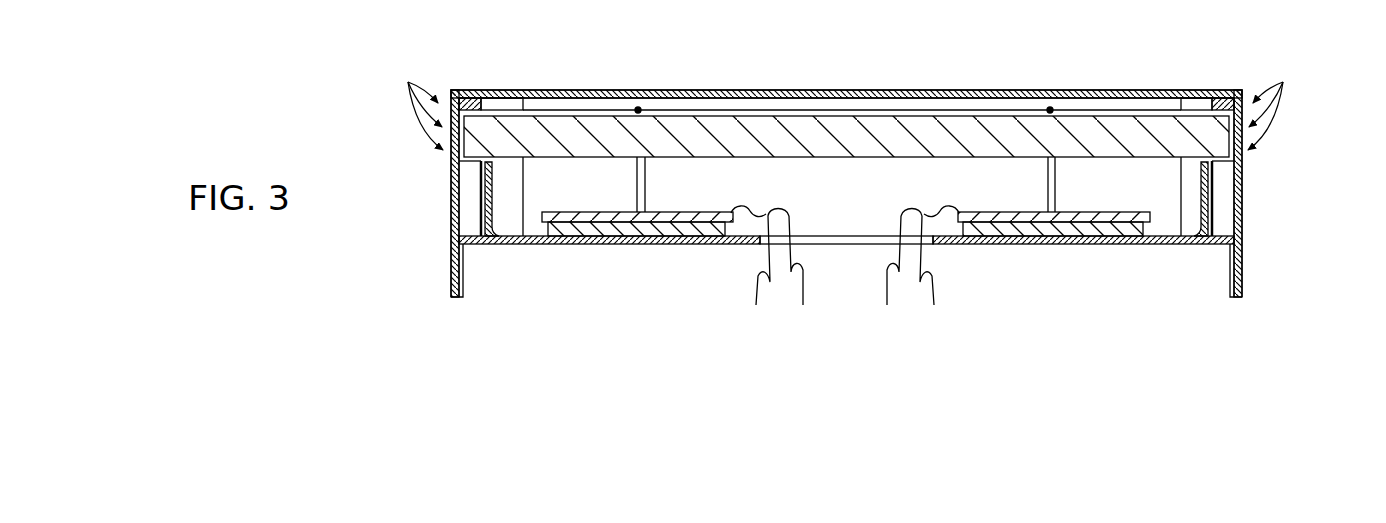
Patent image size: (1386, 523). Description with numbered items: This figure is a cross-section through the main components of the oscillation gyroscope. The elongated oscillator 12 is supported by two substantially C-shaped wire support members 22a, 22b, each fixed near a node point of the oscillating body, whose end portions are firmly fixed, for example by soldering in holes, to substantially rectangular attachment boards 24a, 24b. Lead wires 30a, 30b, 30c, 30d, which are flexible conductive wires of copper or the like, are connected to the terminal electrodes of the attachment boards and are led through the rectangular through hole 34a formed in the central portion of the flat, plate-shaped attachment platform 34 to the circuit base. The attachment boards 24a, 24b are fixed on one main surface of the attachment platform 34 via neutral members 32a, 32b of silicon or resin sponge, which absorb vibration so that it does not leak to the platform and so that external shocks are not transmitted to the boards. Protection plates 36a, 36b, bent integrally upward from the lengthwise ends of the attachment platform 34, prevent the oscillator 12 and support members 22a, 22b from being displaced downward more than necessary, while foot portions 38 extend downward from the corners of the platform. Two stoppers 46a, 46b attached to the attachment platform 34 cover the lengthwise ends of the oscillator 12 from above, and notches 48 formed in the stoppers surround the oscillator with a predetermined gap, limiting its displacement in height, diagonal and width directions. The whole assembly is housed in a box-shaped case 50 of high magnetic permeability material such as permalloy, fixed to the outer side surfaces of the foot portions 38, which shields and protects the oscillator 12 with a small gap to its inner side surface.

The oscillator 12 is at (802, 116).
The support member 22a is at (638, 108).
The support member 22b is at (1050, 108).
The attachment board 24a is at (665, 218).
The attachment board 24b is at (1060, 218).
The lead wire 30a is at (806, 272).
The lead wire 30b is at (768, 275).
The lead wire 30c is at (889, 272).
The lead wire 30d is at (928, 272).
The neutral member 32a is at (595, 228).
The neutral member 32b is at (1100, 228).
The attachment platform 34 is at (1165, 246).
The through hole 34a is at (845, 247).
The protection plate 36a is at (480, 178).
The protection plate 36b is at (1212, 178).
The foot portion 38 is at (467, 283).
The stopper 46a is at (500, 108).
The stopper 46b is at (1218, 108).
The notch 48 is at (470, 200).
The case 50 is at (910, 90).